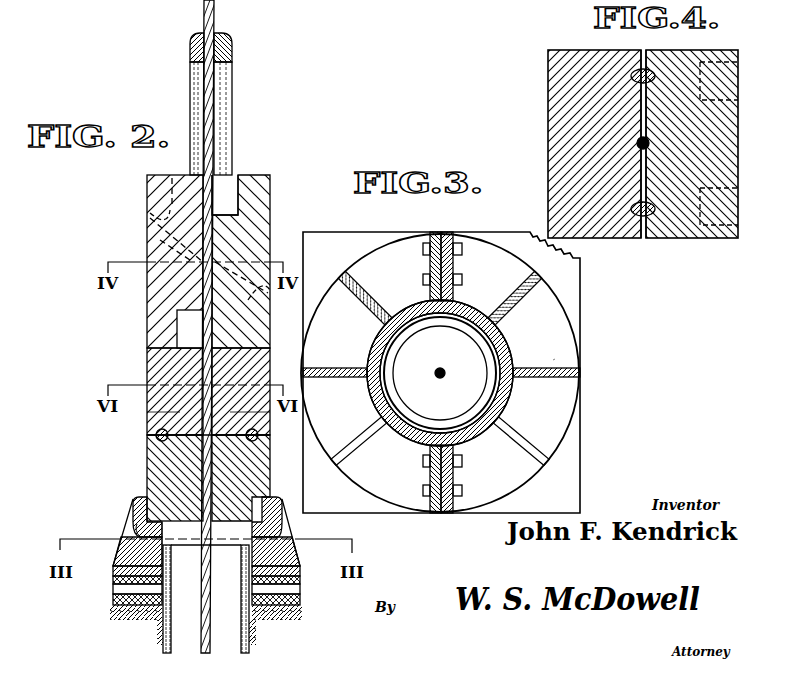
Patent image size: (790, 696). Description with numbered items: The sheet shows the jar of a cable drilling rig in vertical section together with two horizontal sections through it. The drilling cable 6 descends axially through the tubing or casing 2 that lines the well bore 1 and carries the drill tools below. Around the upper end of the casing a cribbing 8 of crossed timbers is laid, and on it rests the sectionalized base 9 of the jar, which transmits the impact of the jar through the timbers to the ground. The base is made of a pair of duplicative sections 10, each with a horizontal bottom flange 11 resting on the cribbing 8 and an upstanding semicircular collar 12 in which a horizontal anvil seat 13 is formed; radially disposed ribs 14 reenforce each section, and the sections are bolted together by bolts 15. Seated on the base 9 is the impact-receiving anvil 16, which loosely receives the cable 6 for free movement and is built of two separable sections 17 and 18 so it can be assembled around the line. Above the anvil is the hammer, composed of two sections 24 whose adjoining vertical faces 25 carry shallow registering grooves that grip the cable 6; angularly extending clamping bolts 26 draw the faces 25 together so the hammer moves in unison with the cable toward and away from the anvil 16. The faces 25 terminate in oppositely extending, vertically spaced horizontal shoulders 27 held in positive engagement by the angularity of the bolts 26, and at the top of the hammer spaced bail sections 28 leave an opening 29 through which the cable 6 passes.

In FIG. 4, the well bore 1 is at (499, 0).
In FIG. 3, the tubing or casing 2 is at (405, 416).
In FIG. 2, the drilling cable 6 is at (210, 112).
In FIG. 3, the drilling cable 6 is at (446, 373).
In FIG. 4, the drilling cable 6 is at (637, 142).
In FIG. 2, the cribbing 8 is at (114, 581).
In FIG. 2, the sectionalized base 9 is at (130, 557).
In FIG. 3, the sectionalized base 9 is at (555, 359).
In FIG. 2, the duplicative sections 10 is at (137, 521).
In FIG. 3, the duplicative sections 10 is at (547, 328).
In FIG. 2, the bottom flange 11 is at (165, 571).
In FIG. 3, the bottom flange 11 is at (368, 258).
In FIG. 2, the semicircular collar 12 is at (160, 543).
In FIG. 3, the semicircular collar 12 is at (374, 340).
In FIG. 2, the anvil seat 13 is at (140, 497).
In FIG. 2, the radially disposed ribs 14 is at (128, 529).
In FIG. 3, the radially disposed ribs 14 is at (527, 304).
In FIG. 3, the bolts 15 is at (423, 283).
In FIG. 2, the impact-receiving anvil 16 is at (157, 412).
In FIG. 2, the anvil section 17 is at (147, 362).
In FIG. 2, the anvil section 18 is at (157, 466).
In FIG. 2, the hammer sections 24 is at (147, 206).
In FIG. 4, the hammer sections 24 is at (557, 103).
In FIG. 4, the vertical faces 25 is at (651, 238).
In FIG. 2, the clamping bolts 26 is at (147, 300).
In FIG. 4, the clamping bolts 26 is at (635, 74).
In FIG. 2, the horizontal shoulders 27 is at (234, 190).
In FIG. 2, the bail sections 28 is at (232, 82).
In FIG. 2, the opening 29 is at (194, 48).